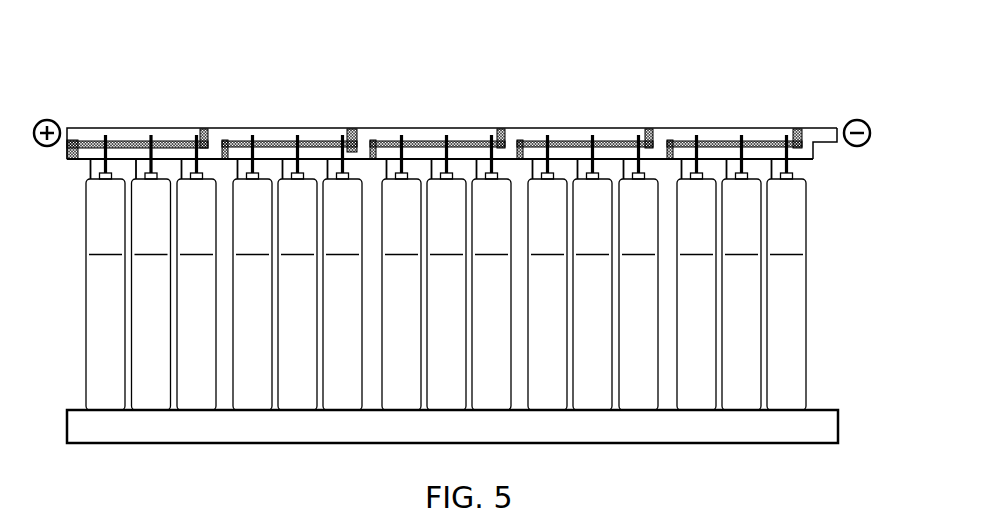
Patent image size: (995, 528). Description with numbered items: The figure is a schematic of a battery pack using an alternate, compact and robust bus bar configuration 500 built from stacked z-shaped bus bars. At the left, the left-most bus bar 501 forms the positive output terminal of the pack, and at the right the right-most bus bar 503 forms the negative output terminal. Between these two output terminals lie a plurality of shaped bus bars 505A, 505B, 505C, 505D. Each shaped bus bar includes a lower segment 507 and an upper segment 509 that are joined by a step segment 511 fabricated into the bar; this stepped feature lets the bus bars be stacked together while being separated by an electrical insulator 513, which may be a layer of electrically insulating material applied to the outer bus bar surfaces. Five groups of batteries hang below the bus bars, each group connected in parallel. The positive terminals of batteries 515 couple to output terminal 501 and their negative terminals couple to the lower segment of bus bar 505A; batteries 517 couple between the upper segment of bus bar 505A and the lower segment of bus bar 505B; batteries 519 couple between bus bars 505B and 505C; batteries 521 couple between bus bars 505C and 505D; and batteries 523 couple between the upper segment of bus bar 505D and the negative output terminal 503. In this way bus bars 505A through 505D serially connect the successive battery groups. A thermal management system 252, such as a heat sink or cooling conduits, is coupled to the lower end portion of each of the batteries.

The bus bar configuration 500 is at (705, 58).
The left-most bus bar 501 is at (121, 126).
The right-most bus bar 503 is at (813, 130).
The shaped bus bar 505A is at (302, 121).
The shaped bus bar 505B is at (461, 128).
The shaped bus bar 505C is at (613, 133).
The shaped bus bar 505D is at (727, 133).
The lower segment 507 is at (353, 149).
The upper segment 509 is at (428, 127).
The step segment 511 is at (374, 145).
The electrical insulator 513 is at (205, 130).
The batteries 515 is at (151, 272).
The batteries 517 is at (297, 272).
The batteries 519 is at (446, 272).
The batteries 521 is at (593, 272).
The batteries 523 is at (741, 272).
The thermal management system 252 is at (468, 433).